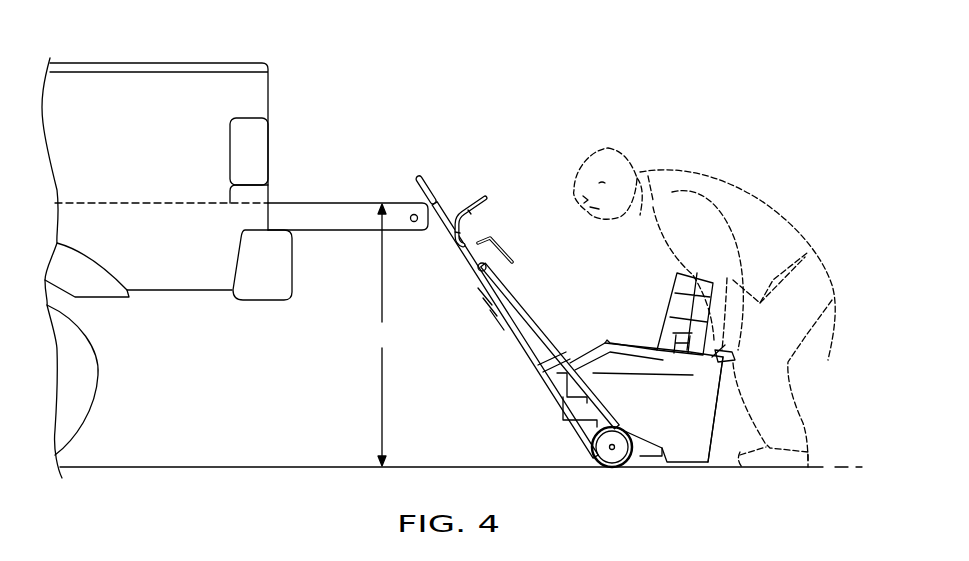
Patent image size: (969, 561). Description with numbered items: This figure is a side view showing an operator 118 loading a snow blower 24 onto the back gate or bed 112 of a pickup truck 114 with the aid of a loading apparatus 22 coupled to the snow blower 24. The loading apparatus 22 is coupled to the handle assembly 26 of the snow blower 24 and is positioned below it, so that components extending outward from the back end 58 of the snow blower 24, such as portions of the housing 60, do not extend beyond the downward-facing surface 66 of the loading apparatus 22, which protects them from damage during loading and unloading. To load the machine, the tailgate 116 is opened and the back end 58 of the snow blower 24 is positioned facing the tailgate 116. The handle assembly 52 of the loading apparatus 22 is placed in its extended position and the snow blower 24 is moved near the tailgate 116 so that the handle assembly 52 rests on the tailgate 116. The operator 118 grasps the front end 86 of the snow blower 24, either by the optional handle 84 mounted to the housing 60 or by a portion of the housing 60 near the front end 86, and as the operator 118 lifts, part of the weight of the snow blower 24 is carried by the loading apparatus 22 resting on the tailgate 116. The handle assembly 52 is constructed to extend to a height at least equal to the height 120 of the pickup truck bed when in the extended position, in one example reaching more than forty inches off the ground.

The pickup truck 114 is at (153, 63).
The back gate or bed 112 is at (163, 203).
The tailgate 116 is at (323, 203).
The height of a pickup truck bed 120 is at (378, 335).
The operator 118 is at (743, 197).
The handle assembly 52 is at (420, 178).
The back end 58 is at (499, 386).
The loading apparatus 22 is at (453, 260).
The handle assembly 26 is at (485, 204).
The downward-facing surface 66 is at (557, 409).
The snow blower 24 is at (582, 324).
The housing 60 is at (673, 417).
The front end 86 is at (722, 403).
The optional handle 84 is at (723, 355).